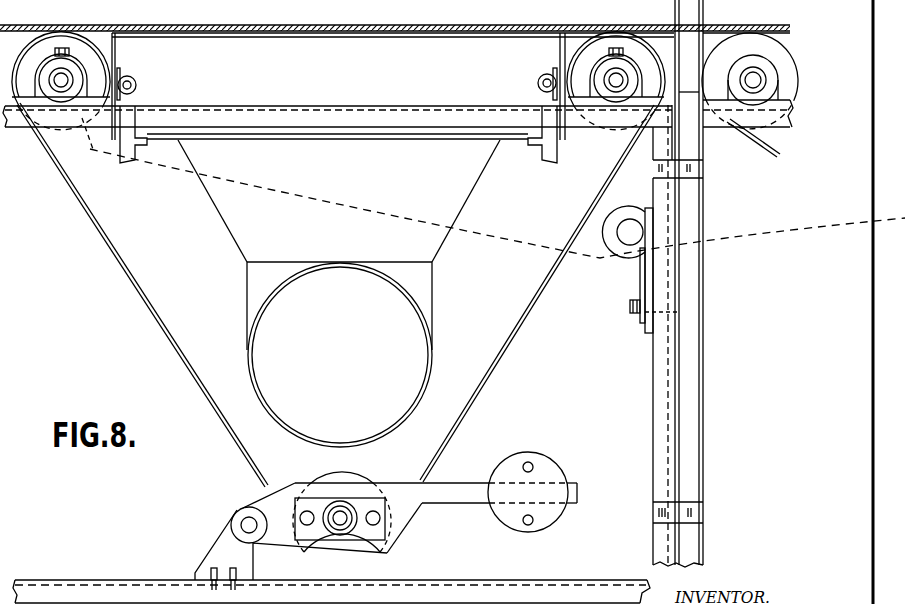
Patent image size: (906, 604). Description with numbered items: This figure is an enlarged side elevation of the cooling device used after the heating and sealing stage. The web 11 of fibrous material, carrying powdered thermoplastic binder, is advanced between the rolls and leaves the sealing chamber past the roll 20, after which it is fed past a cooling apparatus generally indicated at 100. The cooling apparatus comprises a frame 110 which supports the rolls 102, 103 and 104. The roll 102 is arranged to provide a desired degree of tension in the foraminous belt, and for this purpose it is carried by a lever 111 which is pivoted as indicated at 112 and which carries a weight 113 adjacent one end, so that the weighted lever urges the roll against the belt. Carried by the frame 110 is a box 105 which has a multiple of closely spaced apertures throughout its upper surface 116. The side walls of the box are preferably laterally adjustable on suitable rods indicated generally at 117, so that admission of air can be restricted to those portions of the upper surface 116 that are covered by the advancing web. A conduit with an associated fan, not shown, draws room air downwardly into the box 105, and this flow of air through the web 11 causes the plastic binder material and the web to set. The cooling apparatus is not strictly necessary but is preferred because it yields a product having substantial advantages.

The web 11 is at (650, 25).
The roll 20 is at (750, 116).
The cooling apparatus 100 is at (147, 312).
The roll 102 is at (418, 346).
The roll 103 is at (37, 137).
The roll 104 is at (603, 126).
The box 105 is at (110, 47).
The frame 110 is at (655, 385).
The lever 111 is at (455, 485).
The pivot 112 is at (252, 525).
The weight 113 is at (550, 518).
The upper surface 116 is at (333, 37).
The rods 117 is at (137, 85).